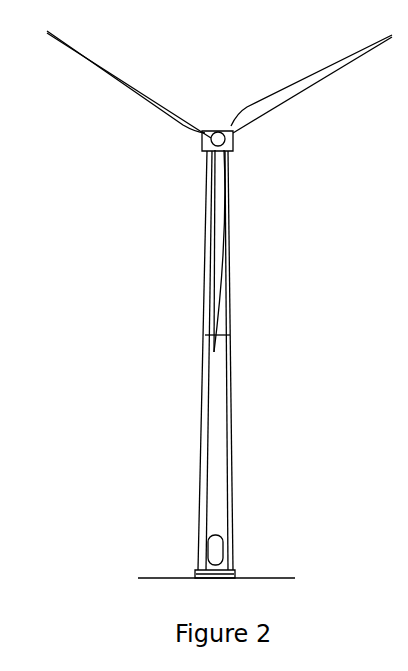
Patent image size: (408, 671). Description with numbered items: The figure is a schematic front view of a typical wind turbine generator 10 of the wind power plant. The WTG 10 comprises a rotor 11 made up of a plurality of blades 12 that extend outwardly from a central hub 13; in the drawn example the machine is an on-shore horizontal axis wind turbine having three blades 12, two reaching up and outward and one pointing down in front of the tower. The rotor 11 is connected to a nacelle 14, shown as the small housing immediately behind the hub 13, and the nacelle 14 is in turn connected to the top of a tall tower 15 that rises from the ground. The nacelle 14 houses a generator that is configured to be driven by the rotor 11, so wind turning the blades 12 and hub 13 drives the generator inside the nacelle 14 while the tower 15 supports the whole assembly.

The wind turbine generator 10 is at (167, 292).
The rotor 11 is at (165, 174).
The blades 12 is at (163, 97).
The hub 13 is at (215, 131).
The nacelle 14 is at (233, 147).
The tower 15 is at (230, 358).